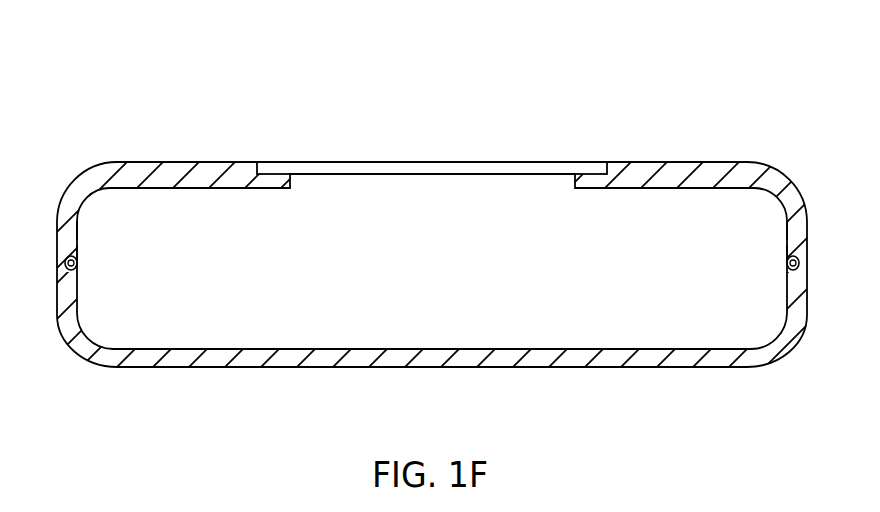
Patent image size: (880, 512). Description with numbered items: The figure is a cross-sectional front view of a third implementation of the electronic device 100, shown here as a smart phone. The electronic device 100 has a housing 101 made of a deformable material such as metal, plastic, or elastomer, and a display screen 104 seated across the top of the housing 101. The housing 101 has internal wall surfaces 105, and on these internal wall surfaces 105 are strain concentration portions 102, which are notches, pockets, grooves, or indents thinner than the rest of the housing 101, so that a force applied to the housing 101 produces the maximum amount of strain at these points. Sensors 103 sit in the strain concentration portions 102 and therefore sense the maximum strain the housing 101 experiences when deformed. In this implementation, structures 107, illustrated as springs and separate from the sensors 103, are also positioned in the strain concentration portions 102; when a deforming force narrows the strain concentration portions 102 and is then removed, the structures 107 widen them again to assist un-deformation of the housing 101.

The electronic device 100 is at (440, 261).
The housing 101 is at (440, 370).
The strain concentration portions 102 is at (65, 255).
The sensors 103 is at (74, 267).
The display screen 104 is at (423, 163).
The internal wall surfaces 105 is at (78, 228).
The structures 107 is at (77, 255).